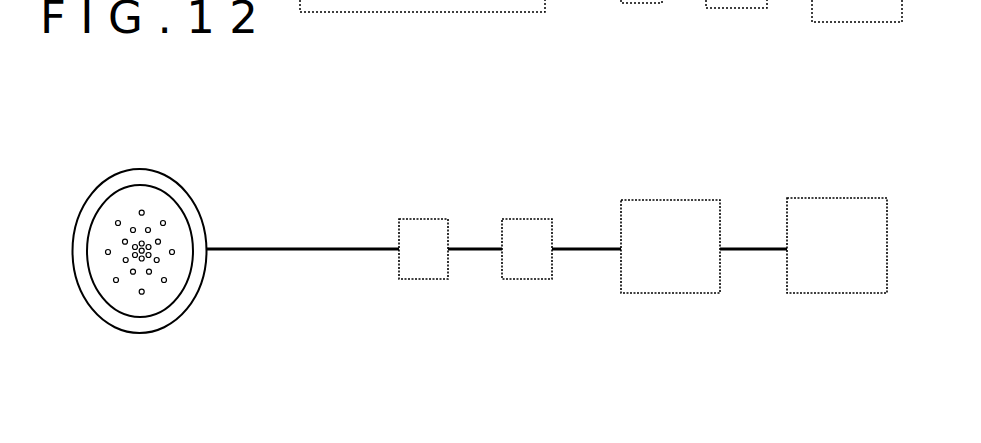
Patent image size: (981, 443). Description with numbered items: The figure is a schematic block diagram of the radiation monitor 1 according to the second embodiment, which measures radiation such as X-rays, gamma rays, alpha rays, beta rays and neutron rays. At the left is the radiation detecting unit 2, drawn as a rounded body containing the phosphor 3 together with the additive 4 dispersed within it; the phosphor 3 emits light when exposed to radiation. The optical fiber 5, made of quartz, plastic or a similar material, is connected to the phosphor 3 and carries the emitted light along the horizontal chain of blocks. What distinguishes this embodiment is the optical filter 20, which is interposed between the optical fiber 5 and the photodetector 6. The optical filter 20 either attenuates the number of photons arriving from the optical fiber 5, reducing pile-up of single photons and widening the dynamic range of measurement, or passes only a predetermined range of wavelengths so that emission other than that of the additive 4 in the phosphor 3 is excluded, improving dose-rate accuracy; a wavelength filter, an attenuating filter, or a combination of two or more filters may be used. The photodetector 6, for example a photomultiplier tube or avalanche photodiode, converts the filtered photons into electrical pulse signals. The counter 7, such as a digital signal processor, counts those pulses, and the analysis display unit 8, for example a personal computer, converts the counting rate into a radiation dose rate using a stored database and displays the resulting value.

The radiation monitor 1 is at (270, 150).
The radiation detecting unit 2 is at (133, 170).
The phosphor 3 is at (113, 293).
The additive 4 is at (140, 293).
The optical fiber 5 is at (325, 249).
The optical filter 20 is at (422, 248).
The photodetector 6 is at (523, 250).
The counter 7 is at (658, 222).
The analysis display unit 8 is at (832, 222).